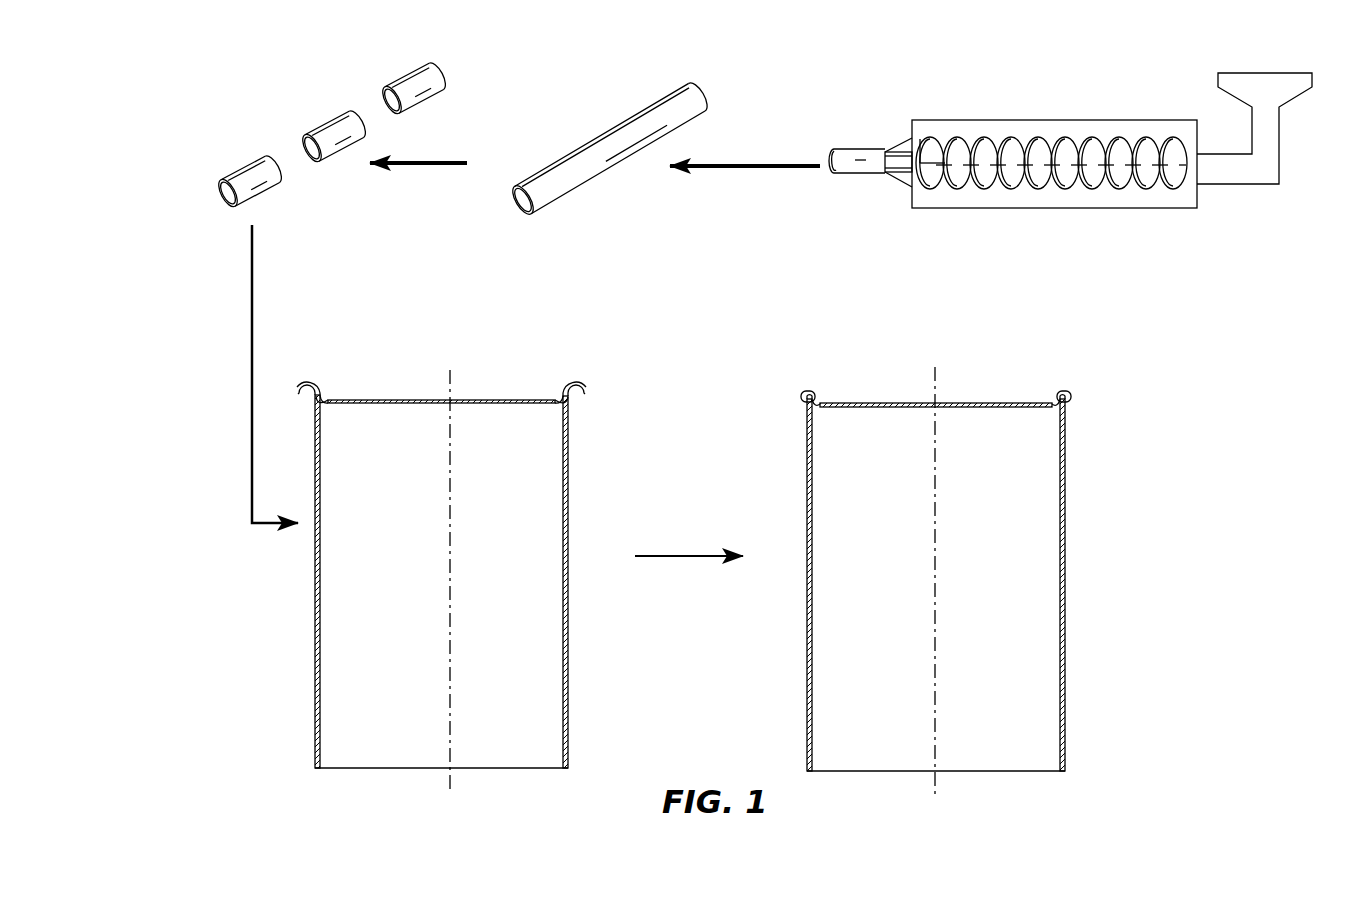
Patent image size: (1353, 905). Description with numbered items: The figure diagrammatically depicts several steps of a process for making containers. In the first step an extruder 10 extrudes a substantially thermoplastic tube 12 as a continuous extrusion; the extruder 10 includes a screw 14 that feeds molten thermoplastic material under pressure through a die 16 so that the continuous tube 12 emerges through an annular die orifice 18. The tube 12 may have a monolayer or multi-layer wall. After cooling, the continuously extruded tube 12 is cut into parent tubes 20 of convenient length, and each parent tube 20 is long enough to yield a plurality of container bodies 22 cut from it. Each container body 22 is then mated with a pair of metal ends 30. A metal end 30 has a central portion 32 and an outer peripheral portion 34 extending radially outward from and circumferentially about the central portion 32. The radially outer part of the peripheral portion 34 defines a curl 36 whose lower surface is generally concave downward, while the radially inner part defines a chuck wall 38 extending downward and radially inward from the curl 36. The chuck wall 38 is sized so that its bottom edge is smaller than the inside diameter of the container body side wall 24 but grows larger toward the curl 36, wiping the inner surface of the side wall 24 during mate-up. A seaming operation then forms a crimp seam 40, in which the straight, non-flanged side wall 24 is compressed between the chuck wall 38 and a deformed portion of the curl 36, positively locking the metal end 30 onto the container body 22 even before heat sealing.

The extruder 10 is at (1070, 159).
The thermoplastic tube 12 is at (852, 170).
The screw 14 is at (1118, 175).
The die 16 is at (870, 129).
The annular die orifice 18 is at (888, 150).
The parent tube 20 is at (685, 118).
The container body 22 is at (378, 93).
The side wall 24 is at (568, 538).
The metal end 30 is at (428, 410).
The central portion 32 is at (479, 396).
The outer peripheral portion 34 is at (573, 382).
The curl 36 is at (310, 387).
The chuck wall 38 is at (328, 396).
The crimp seam 40 is at (797, 398).